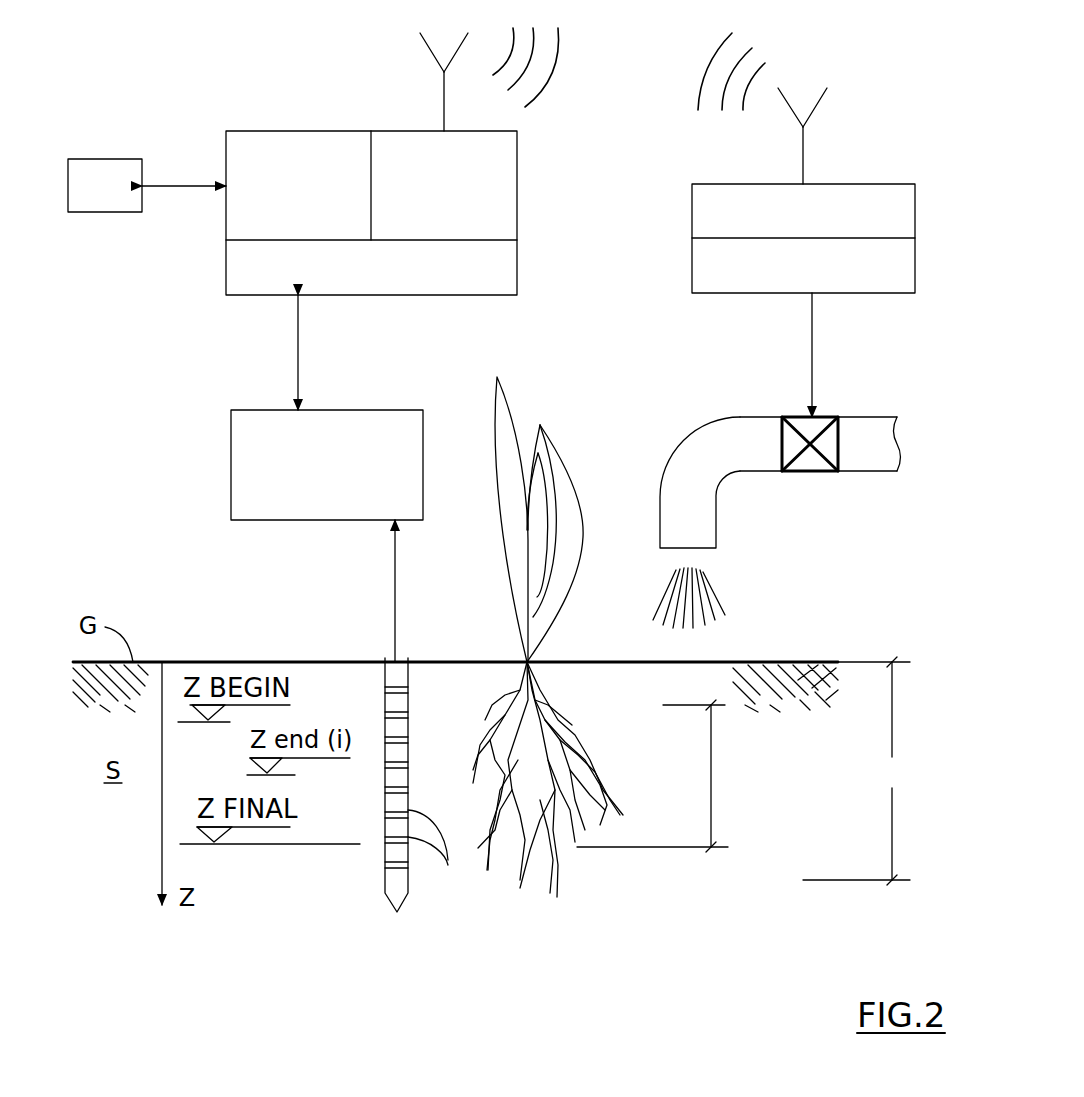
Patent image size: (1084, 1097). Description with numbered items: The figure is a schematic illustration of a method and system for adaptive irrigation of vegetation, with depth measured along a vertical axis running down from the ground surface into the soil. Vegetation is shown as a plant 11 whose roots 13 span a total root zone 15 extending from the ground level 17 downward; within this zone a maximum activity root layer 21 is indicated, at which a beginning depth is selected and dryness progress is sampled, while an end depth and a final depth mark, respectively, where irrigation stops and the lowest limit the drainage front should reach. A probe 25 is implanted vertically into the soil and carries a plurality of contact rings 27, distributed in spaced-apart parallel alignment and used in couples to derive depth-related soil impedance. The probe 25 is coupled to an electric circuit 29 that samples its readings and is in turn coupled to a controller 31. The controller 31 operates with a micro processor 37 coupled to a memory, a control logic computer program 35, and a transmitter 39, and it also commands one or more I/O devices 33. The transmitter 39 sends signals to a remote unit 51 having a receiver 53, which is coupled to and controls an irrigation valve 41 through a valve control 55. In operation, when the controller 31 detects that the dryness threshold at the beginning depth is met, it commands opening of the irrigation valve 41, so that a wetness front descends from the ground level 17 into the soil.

The plant 11 is at (560, 455).
The roots 13 is at (568, 718).
The total root zone 15 is at (870, 771).
The ground level 17 is at (742, 662).
The maximum activity root layer 21 is at (672, 776).
The probe 25 is at (410, 672).
The contact rings 27 is at (408, 863).
The electric circuit 29 is at (253, 410).
The controller 31 is at (250, 130).
The I/O devices 33 is at (128, 157).
The control logic computer program 35 is at (345, 143).
The micro processor 37 is at (480, 283).
The transmitter 39 is at (423, 143).
The irrigation valve 41 is at (795, 415).
The remote unit 51 is at (725, 183).
The receiver 53 is at (898, 197).
The valve control 55 is at (898, 277).